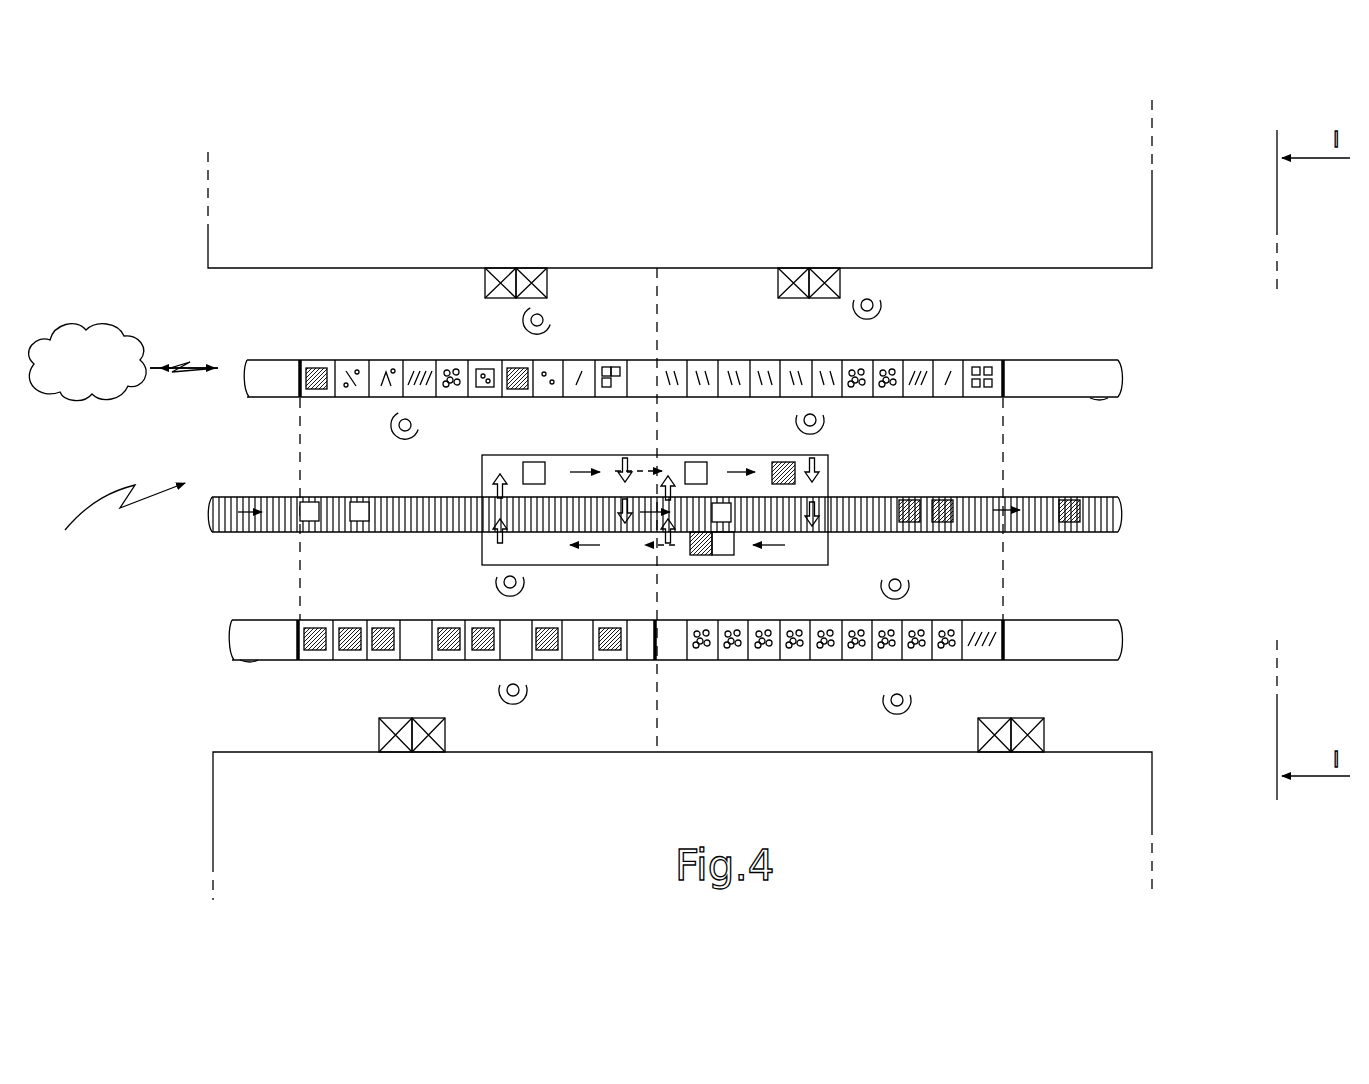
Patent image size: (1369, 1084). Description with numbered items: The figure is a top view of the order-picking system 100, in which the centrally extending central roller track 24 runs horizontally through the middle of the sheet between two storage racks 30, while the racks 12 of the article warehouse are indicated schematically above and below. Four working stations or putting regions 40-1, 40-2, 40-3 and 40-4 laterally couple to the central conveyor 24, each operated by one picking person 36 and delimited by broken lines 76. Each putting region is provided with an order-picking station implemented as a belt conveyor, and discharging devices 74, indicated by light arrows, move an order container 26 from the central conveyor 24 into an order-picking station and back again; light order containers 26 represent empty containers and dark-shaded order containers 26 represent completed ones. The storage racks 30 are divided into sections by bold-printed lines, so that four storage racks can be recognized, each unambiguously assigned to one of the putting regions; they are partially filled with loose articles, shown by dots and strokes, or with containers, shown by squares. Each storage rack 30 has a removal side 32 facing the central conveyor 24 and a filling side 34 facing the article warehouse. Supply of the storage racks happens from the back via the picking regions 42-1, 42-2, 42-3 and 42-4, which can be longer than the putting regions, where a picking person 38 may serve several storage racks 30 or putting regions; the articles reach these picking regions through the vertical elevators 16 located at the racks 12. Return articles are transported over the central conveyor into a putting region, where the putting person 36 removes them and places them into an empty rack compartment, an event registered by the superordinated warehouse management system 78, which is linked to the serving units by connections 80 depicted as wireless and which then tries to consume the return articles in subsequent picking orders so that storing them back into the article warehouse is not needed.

The rack 12 is at (1108, 227).
The vertical elevator 16 is at (778, 283).
The central roller track 24 is at (1118, 513).
The order container 26 is at (358, 533).
The storage rack 30 is at (1118, 371).
The removal side 32 is at (247, 614).
The filling side 34 is at (1093, 356).
The picking person 36 is at (824, 420).
The picking person 38 is at (882, 305).
The putting region 40-1 is at (800, 600).
The putting region 40-2 is at (750, 437).
The putting region 40-3 is at (620, 437).
The putting region 40-4 is at (656, 600).
The picking region 42-1 is at (832, 719).
The picking region 42-2 is at (1070, 314).
The picking region 42-3 is at (405, 317).
The picking region 42-4 is at (396, 700).
The discharging device 74 is at (818, 483).
The broken line 76 is at (298, 448).
The warehouse management system 78 is at (107, 365).
The connection 80 is at (182, 363).
The order-picking system 100 is at (119, 523).